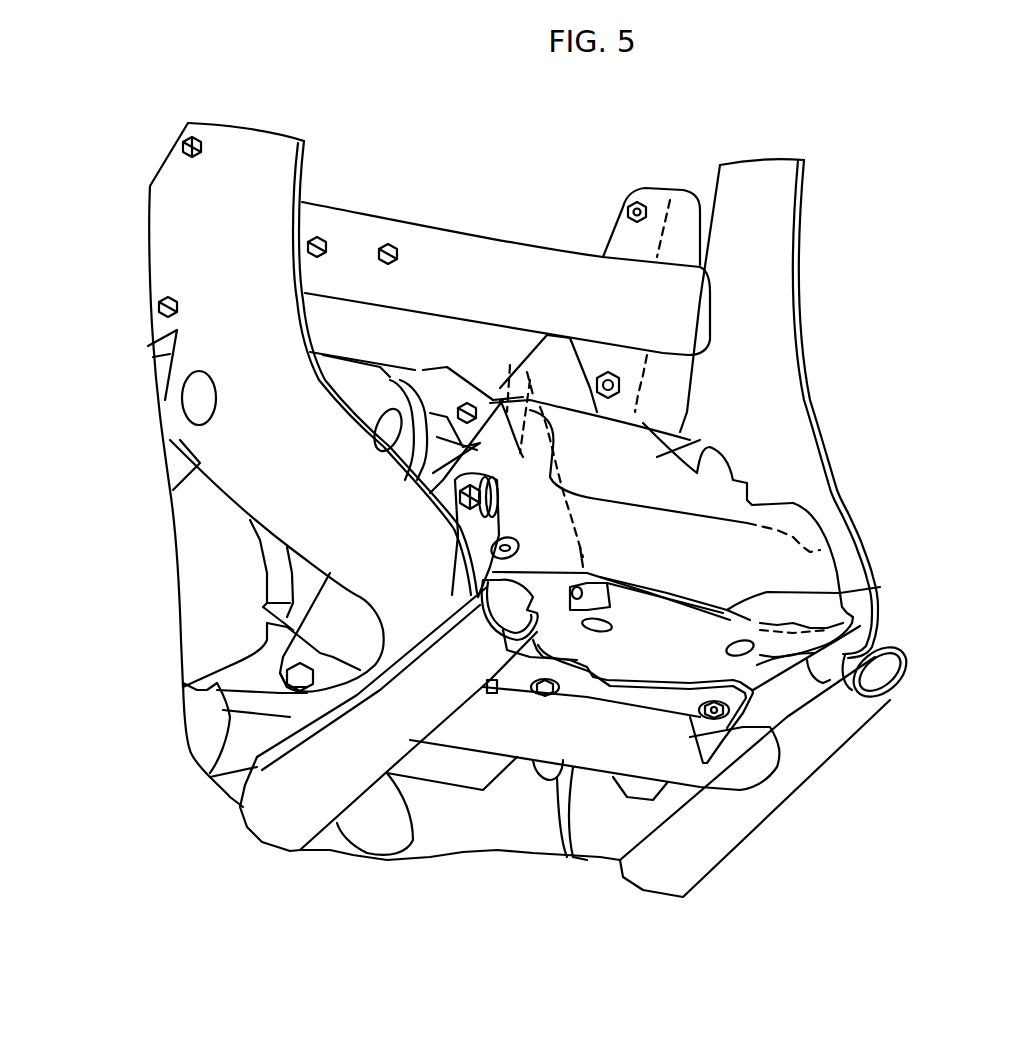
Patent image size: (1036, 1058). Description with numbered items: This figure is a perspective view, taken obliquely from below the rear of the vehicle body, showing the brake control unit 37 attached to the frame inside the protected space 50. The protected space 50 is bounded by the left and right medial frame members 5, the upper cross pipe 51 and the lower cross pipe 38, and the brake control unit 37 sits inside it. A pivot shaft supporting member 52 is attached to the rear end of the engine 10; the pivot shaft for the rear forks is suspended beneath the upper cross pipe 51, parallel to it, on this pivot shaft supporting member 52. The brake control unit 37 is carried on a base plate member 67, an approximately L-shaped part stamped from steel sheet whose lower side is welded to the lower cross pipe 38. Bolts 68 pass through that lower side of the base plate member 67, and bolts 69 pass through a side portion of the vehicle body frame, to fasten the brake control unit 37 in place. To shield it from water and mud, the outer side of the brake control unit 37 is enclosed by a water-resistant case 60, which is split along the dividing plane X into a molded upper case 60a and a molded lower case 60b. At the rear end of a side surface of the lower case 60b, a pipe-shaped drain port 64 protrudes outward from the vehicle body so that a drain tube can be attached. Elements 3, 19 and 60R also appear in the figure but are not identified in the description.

The cross member 3 is at (268, 828).
The medial frame member 5 is at (222, 256).
The engine 10 is at (225, 572).
The floor member 19 is at (205, 657).
The brake control unit 37 is at (733, 573).
The lower cross pipe 38 is at (560, 740).
The protected space 50 is at (743, 470).
The upper cross pipe 51 is at (438, 265).
The pivot shaft supporting member 52 is at (664, 432).
The water-resistant case 60 is at (500, 395).
The upper case 60a is at (653, 460).
The lower case 60b is at (900, 672).
The rear portion of support member 60R is at (793, 570).
The drain port 64 is at (780, 742).
The base plate member 67 is at (607, 680).
The bolts 68 is at (553, 693).
The bolts 69 is at (455, 560).
The dividing plane X is at (880, 587).